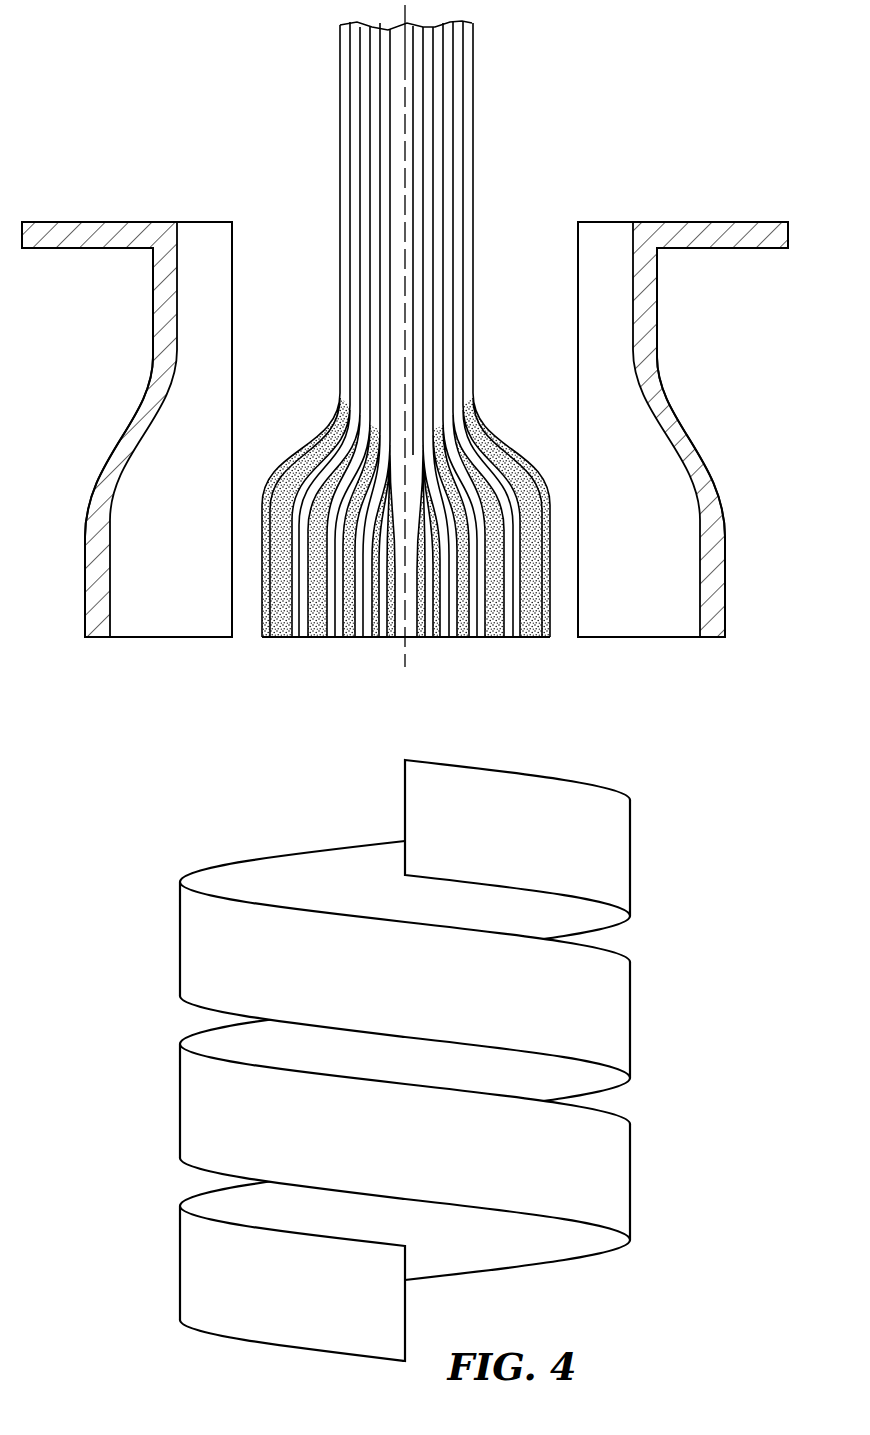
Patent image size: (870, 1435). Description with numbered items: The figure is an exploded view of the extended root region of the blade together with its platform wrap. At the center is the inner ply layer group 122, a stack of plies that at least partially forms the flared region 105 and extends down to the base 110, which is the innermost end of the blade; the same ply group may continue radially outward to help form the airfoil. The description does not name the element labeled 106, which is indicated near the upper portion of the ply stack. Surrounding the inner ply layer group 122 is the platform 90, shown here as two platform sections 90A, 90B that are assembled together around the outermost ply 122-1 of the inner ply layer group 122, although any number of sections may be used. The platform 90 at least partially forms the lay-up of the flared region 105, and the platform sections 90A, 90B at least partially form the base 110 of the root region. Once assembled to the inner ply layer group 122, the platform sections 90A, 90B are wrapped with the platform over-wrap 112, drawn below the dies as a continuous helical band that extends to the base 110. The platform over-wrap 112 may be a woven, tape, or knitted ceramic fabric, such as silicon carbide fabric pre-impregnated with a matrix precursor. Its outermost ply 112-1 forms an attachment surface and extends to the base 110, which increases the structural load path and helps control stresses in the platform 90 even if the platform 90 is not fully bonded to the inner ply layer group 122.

The platform 90 is at (423, 444).
The platform section 90A is at (105, 230).
The platform section 90B is at (701, 387).
The flared region 105 is at (750, 478).
The stacked plate assembly 106 is at (535, 236).
The base 110 is at (457, 640).
The inner ply layer group 122 is at (425, 561).
The outermost ply 122-1 is at (535, 500).
The platform over-wrap 112 is at (475, 1060).
The outermost ply 112-1 is at (624, 1038).